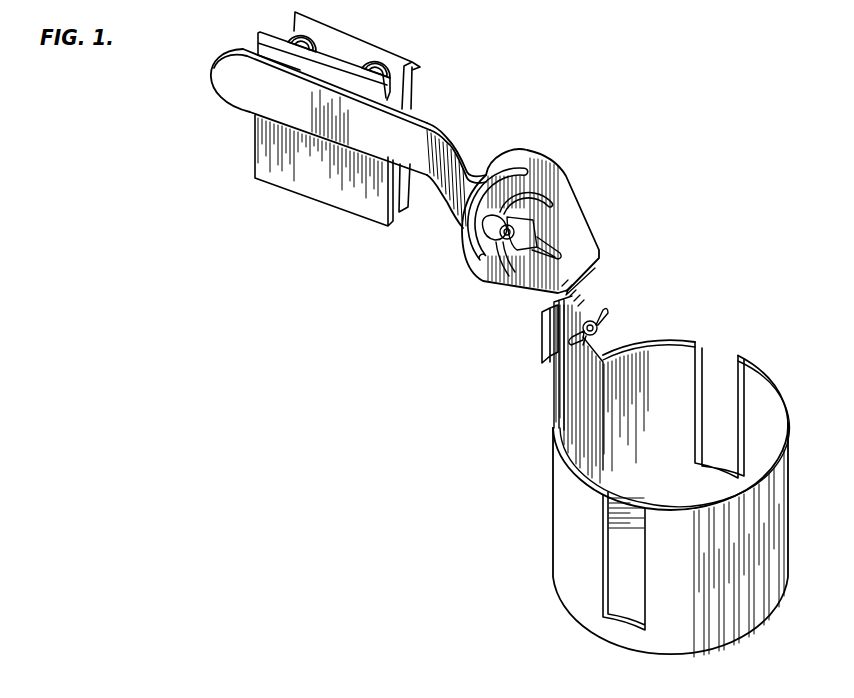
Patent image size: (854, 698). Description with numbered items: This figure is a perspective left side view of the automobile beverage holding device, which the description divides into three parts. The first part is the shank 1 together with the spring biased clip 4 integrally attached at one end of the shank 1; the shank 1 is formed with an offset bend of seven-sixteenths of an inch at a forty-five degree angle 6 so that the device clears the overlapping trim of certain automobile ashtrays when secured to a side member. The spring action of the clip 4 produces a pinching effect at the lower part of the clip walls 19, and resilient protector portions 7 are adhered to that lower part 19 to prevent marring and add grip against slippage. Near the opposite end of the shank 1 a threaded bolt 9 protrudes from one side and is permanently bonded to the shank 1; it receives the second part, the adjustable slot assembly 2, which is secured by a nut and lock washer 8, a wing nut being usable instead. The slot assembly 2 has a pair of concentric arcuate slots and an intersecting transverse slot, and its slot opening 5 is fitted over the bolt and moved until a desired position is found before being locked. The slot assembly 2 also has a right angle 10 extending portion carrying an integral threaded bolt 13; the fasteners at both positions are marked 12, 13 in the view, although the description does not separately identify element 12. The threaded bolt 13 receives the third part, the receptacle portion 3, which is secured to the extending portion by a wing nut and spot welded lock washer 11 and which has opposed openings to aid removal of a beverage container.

The shank 1 is at (365, 112).
The adjustable slot assembly 2 is at (390, 97).
The lower part of the clip walls 19 is at (366, 60).
The spring biased clip 4 is at (253, 97).
The receptacle portion 3 is at (457, 148).
The offset bend at a 45 degree angle 6 is at (580, 230).
The wing nut and spot welded lock washer 11 is at (458, 247).
The slot opening 5 is at (497, 250).
The bolt 12 is at (477, 264).
The threaded bolt 13 is at (580, 364).
The resilient protector portions 7 is at (541, 316).
The nut and lock washer 8 is at (590, 333).
The threaded bolt 9 is at (570, 573).
The right angle extending portion 10 is at (727, 408).